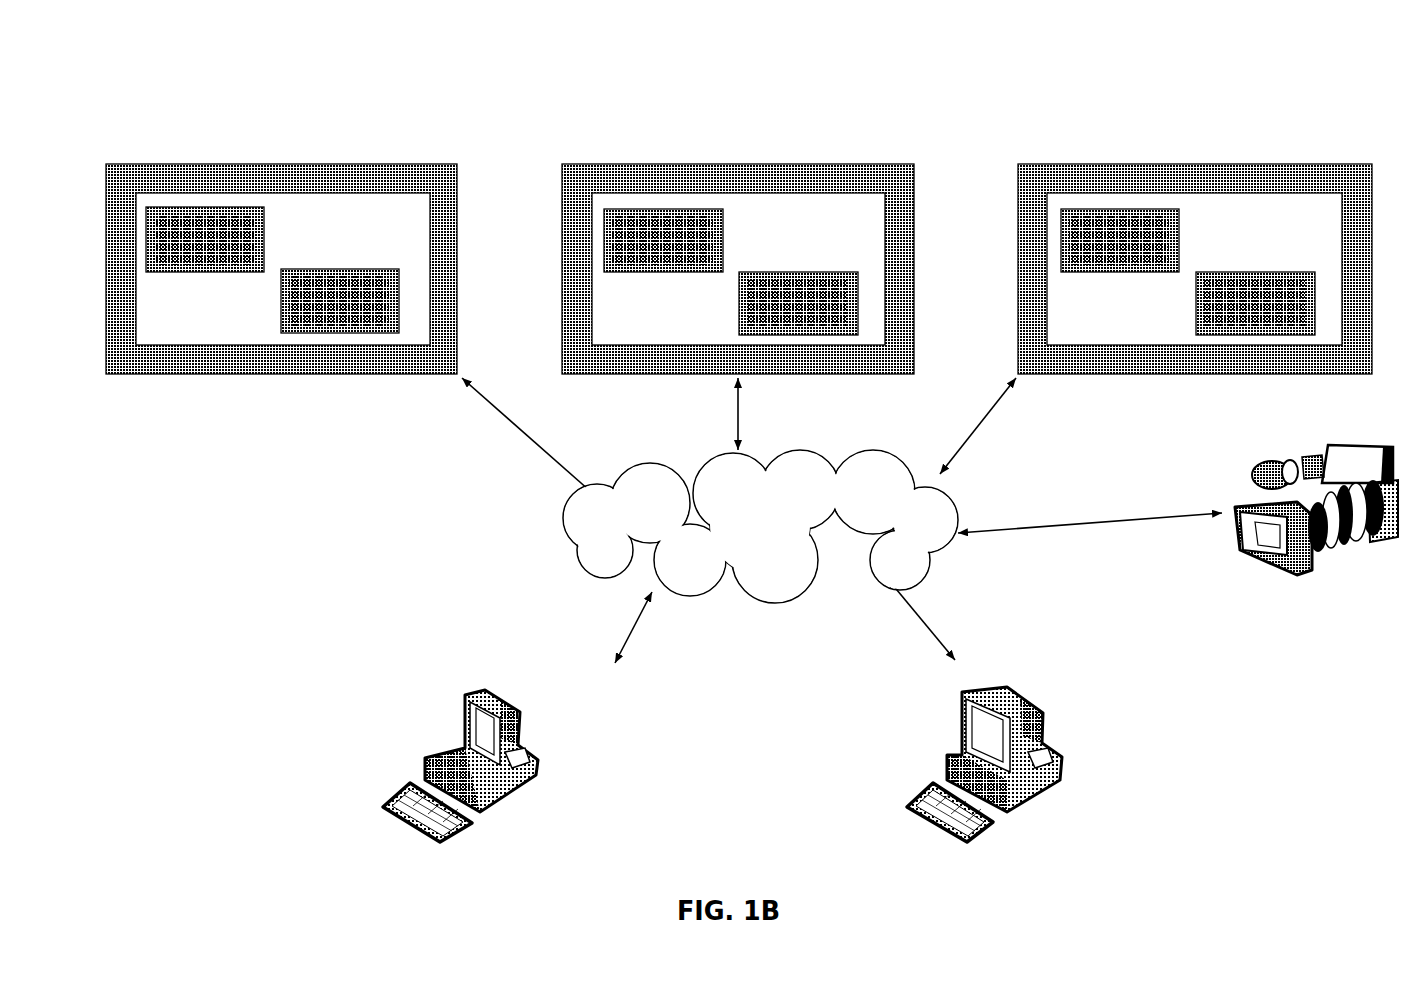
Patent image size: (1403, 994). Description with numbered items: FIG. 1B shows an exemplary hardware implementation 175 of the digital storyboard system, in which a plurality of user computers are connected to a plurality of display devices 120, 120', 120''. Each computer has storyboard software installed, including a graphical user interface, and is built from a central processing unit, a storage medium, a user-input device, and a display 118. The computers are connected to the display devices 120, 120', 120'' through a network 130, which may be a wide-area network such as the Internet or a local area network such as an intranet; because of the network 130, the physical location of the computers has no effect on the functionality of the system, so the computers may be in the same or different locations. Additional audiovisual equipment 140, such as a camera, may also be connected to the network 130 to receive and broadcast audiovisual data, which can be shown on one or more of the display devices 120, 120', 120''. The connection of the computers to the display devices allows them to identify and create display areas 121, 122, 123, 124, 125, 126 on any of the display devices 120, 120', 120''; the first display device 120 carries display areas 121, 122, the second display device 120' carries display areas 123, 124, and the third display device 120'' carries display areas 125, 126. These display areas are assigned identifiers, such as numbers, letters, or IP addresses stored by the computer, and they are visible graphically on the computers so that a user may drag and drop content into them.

The system 175 is at (323, 50).
The display device 120 is at (281, 258).
The display device 120' is at (738, 258).
The display device 120'' is at (1195, 258).
The display area 121 is at (205, 239).
The display area 122 is at (340, 301).
The display area 123 is at (663, 240).
The display area 124 is at (798, 303).
The display area 125 is at (1120, 240).
The display area 126 is at (1255, 303).
The network 130 is at (760, 526).
The audiovisual equipment 140 is at (1316, 517).
The display 118 is at (985, 742).